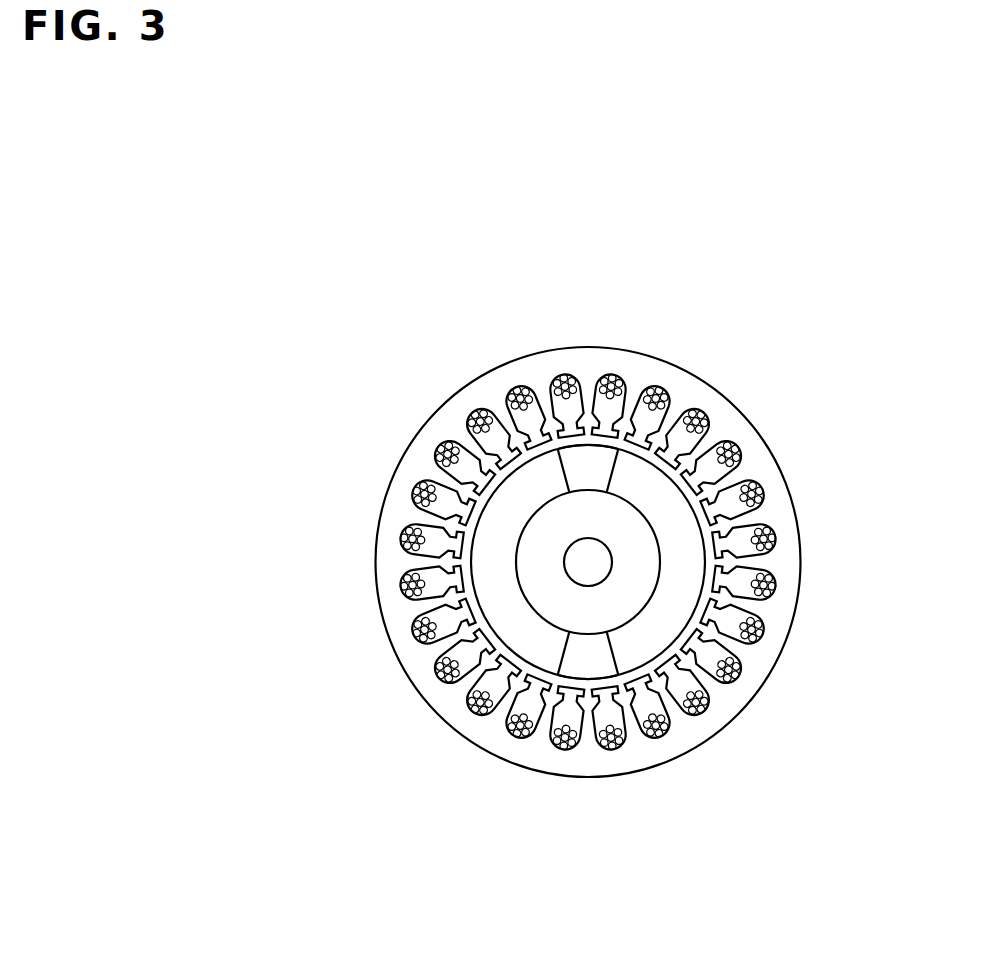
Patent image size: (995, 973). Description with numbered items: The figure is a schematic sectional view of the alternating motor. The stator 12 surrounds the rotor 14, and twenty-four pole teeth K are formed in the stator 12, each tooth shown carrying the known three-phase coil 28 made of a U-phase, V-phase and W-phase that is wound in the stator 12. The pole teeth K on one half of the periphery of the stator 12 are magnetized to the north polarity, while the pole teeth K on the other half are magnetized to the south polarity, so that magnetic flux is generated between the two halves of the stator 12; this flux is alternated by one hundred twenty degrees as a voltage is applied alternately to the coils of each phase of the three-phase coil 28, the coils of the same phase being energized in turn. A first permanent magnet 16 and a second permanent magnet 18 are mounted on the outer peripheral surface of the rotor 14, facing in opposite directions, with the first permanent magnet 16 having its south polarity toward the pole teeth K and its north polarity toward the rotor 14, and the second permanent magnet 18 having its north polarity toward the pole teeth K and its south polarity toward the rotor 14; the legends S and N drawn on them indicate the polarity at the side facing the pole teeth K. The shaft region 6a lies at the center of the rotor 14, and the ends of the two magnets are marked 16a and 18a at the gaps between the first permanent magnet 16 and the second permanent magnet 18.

The rotor shaft 6a is at (588, 553).
The stator 12 is at (728, 422).
The rotor 14 is at (548, 597).
The first permanent magnet 16 is at (679, 612).
The magnet end portion 16a is at (625, 662).
The second permanent magnet 18 is at (496, 515).
The magnet end portion 18a is at (533, 470).
The three-phase coil 28 is at (762, 493).
The pole teeth K is at (716, 557).